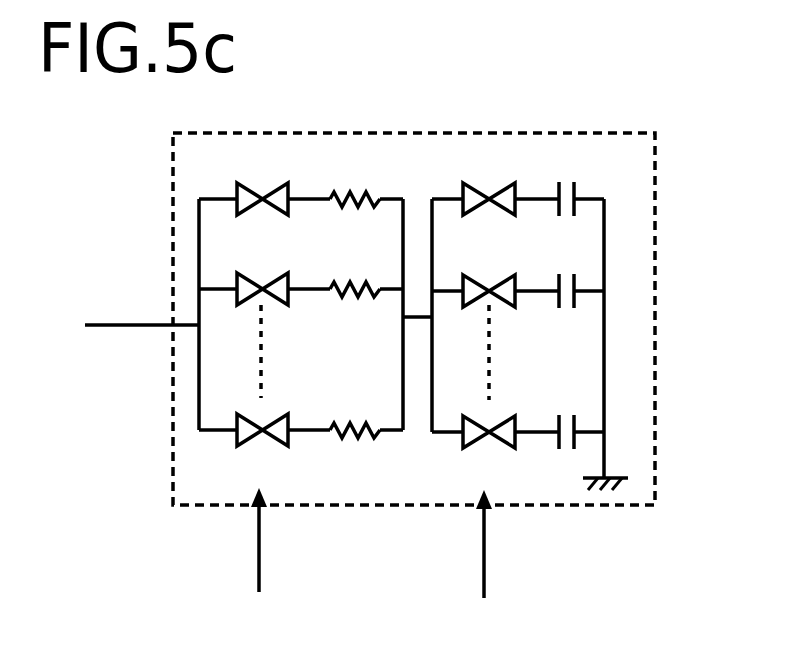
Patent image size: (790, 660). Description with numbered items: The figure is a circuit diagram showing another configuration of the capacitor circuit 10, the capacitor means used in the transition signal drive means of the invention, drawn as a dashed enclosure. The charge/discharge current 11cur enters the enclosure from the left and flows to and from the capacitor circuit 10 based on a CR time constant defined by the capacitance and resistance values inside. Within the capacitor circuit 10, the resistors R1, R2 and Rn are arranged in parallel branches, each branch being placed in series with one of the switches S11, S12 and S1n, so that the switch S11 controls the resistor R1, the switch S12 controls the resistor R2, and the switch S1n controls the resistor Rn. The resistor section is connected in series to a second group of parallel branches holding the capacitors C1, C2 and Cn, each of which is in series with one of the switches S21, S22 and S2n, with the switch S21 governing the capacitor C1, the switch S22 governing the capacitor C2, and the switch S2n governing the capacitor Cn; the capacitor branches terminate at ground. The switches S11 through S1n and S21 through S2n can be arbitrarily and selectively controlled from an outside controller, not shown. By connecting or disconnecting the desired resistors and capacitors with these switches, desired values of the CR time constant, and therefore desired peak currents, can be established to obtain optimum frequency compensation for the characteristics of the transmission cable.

The capacitor circuit 10 is at (655, 383).
The charge/discharge current 11cur is at (138, 306).
The switch S11 is at (261, 182).
The switch S12 is at (261, 272).
The switch S1n is at (259, 448).
The resistor R1 is at (355, 182).
The resistor R2 is at (355, 272).
The resistor Rn is at (355, 411).
The switch S21 is at (489, 184).
The switch S22 is at (490, 275).
The switch S2n is at (488, 452).
The capacitor C1 is at (566, 184).
The capacitor C2 is at (566, 274).
The capacitor Cn is at (562, 414).